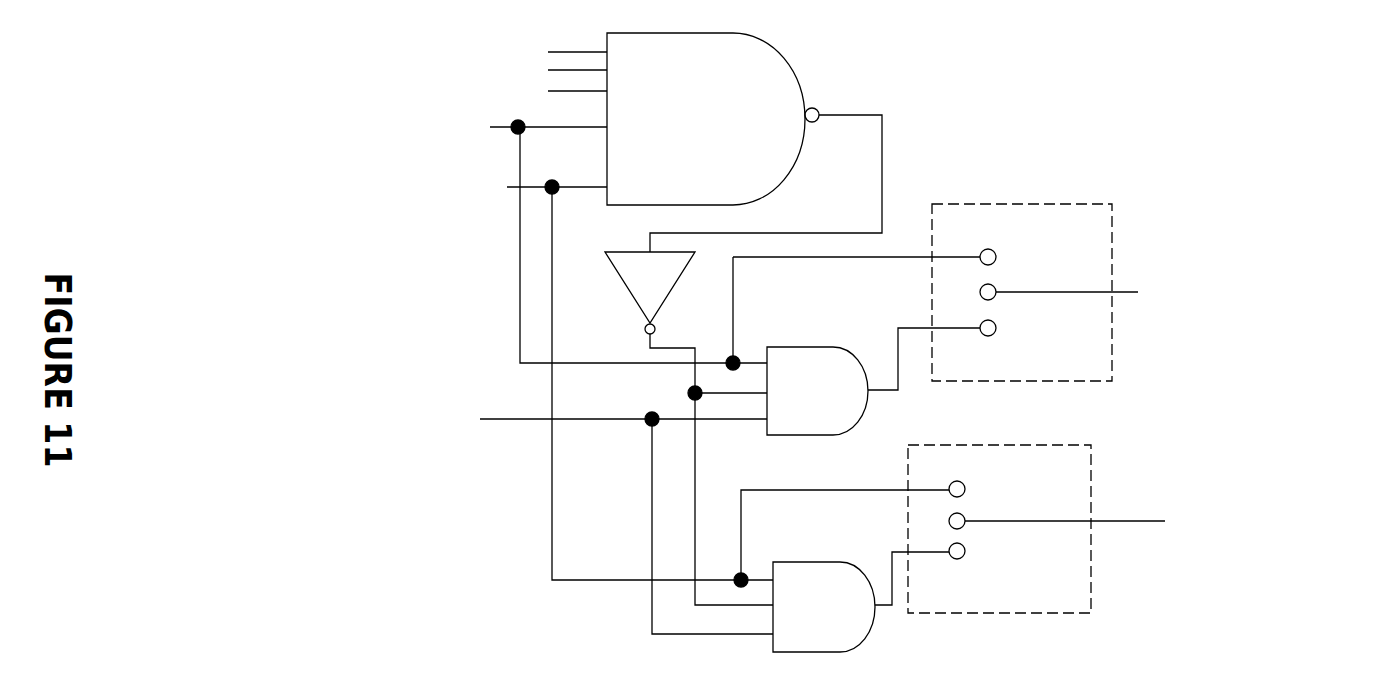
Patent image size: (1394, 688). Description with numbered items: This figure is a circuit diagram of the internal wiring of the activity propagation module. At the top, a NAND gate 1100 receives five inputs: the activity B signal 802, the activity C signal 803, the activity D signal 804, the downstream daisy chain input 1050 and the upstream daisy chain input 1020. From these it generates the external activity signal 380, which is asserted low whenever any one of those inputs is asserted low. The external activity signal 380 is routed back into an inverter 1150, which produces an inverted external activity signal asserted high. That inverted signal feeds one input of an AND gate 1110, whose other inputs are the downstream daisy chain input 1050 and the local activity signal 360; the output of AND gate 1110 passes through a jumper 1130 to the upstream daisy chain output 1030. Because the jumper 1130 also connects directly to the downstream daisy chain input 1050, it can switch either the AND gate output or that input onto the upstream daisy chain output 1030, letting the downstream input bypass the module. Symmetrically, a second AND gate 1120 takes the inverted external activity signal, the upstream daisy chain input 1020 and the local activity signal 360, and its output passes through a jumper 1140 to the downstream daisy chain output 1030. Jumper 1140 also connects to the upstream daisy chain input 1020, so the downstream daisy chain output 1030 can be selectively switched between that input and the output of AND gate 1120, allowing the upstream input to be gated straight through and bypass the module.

The activity B input 802 is at (497, 43).
The activity C input 803 is at (497, 68).
The activity D input 804 is at (497, 91).
The downstream daisy chain input 1050 is at (512, 242).
The upstream daisy chain input 1020 is at (503, 383).
The NAND gate 1100 is at (713, 119).
The external activity signal 380 is at (882, 112).
The inverter 1150 is at (689, 428).
The local activity signal 360 is at (515, 518).
The AND gate 1110 is at (873, 381).
The AND gate 1120 is at (861, 602).
The jumper 1130 is at (922, 292).
The jumper 1140 is at (916, 529).
The daisy chain output 1030 is at (1178, 409).